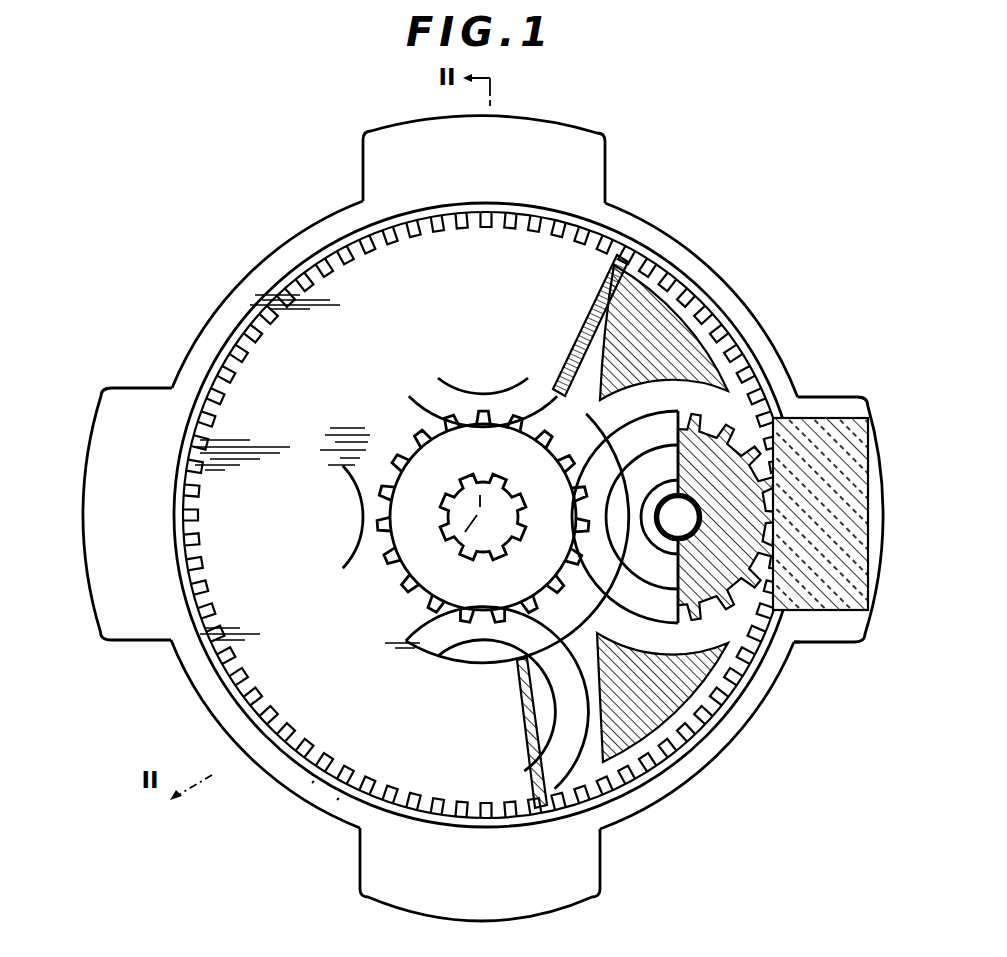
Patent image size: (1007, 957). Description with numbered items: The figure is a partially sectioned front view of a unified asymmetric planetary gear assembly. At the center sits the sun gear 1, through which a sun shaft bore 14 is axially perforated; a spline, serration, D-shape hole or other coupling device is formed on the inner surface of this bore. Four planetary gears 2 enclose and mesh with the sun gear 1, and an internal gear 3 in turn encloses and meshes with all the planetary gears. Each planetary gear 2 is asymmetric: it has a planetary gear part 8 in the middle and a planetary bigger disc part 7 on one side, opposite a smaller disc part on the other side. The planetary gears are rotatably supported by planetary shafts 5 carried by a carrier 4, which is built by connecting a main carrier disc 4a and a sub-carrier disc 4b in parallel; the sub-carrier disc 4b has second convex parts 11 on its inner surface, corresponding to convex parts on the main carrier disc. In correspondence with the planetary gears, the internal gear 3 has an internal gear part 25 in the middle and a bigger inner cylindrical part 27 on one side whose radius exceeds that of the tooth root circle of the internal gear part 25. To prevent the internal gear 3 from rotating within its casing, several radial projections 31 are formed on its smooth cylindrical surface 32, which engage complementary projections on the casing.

The sun gear 1 is at (393, 535).
The planetary gear 2 is at (423, 393).
The internal gear 3 is at (253, 278).
The carrier 4 is at (486, 544).
The main carrier disc 4a is at (597, 803).
The sub-carrier disc 4b is at (615, 825).
The planetary shaft 5 is at (765, 392).
The planetary bigger disc part 7 is at (767, 650).
The planetary gear part 8 is at (777, 622).
The second convex part 11 is at (680, 333).
The sun shaft bore 14 is at (493, 535).
The internal gear part 25 is at (312, 783).
The bigger inner cylindrical part 27 is at (337, 800).
The radial projection 31 is at (570, 142).
The smooth cylindrical surface 32 is at (333, 207).